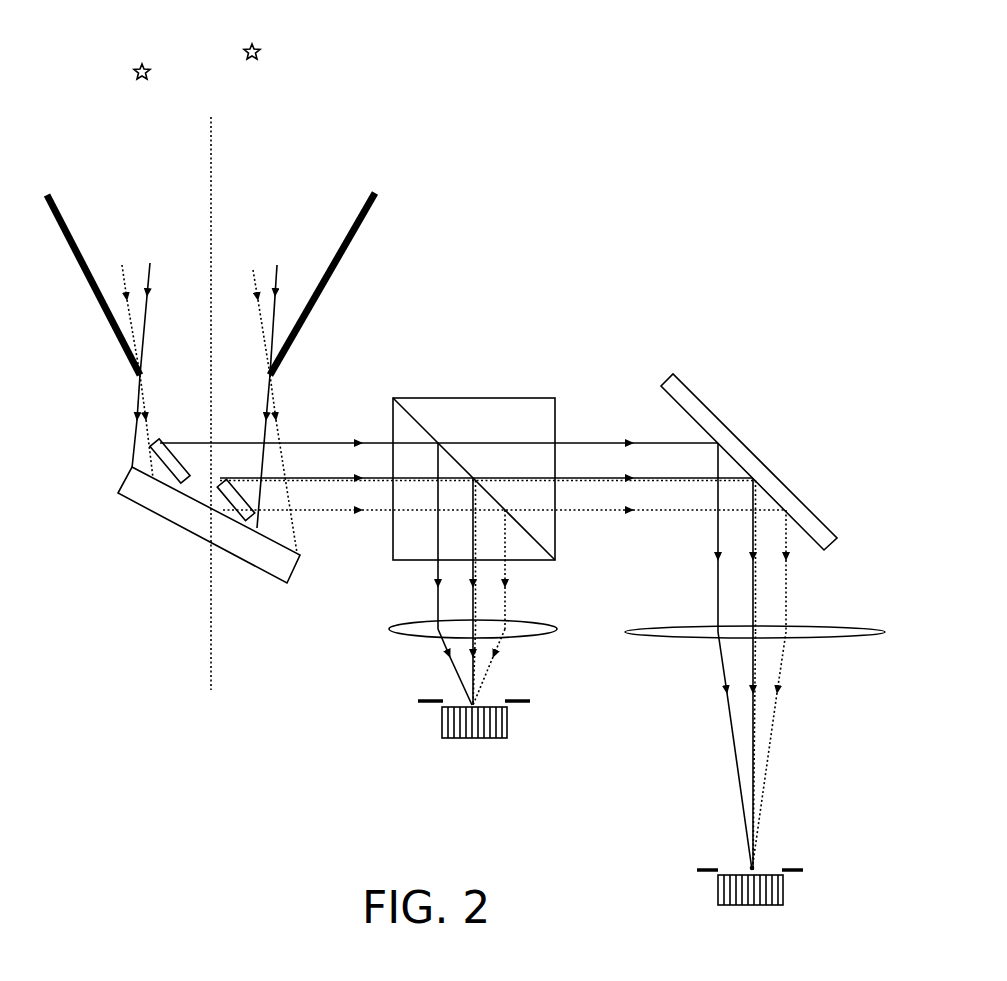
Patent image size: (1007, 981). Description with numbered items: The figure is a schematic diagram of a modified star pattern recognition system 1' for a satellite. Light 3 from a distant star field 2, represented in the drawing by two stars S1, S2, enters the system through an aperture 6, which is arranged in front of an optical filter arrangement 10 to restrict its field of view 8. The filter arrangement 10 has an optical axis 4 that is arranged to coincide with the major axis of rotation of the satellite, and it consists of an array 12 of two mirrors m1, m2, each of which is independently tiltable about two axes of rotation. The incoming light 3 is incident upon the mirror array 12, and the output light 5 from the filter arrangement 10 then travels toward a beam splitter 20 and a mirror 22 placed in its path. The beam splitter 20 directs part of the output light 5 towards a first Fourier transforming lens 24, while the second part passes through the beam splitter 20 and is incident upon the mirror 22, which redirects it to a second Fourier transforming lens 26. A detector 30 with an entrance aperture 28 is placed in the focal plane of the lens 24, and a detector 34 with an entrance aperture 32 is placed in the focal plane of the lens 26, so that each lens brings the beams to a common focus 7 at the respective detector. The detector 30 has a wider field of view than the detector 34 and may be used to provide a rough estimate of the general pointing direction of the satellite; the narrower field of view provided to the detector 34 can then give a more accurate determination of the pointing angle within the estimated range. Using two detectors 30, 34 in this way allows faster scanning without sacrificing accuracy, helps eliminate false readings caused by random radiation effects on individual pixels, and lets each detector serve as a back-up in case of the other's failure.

The star pattern recognition system 1' is at (132, 723).
The distant star field 2 is at (246, 46).
The first light source S1 is at (134, 83).
The second light source S2 is at (244, 66).
The light 3 is at (268, 274).
The optical axis 4 is at (216, 169).
The output light 5 is at (332, 441).
The aperture 6 is at (72, 256).
The common focus 7 is at (758, 866).
The field of view 8 is at (264, 373).
The optical filter arrangement 10 is at (143, 510).
The mirror array 12 is at (170, 480).
The mirror m1 is at (157, 440).
The mirror m2 is at (226, 477).
The beam splitter 20 is at (537, 397).
The mirror 22 is at (702, 400).
The Fourier transforming lens 24 is at (386, 631).
The Fourier transforming lens 26 is at (655, 637).
The entrance aperture 28 is at (412, 703).
The detector 30 is at (437, 748).
The entrance aperture 32 is at (692, 870).
The detector 34 is at (715, 912).